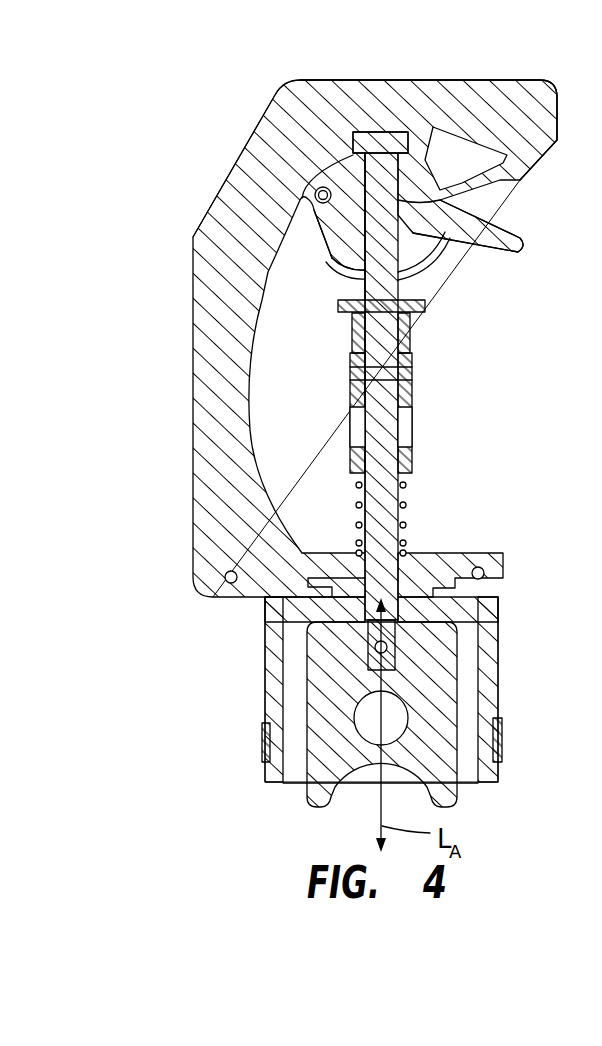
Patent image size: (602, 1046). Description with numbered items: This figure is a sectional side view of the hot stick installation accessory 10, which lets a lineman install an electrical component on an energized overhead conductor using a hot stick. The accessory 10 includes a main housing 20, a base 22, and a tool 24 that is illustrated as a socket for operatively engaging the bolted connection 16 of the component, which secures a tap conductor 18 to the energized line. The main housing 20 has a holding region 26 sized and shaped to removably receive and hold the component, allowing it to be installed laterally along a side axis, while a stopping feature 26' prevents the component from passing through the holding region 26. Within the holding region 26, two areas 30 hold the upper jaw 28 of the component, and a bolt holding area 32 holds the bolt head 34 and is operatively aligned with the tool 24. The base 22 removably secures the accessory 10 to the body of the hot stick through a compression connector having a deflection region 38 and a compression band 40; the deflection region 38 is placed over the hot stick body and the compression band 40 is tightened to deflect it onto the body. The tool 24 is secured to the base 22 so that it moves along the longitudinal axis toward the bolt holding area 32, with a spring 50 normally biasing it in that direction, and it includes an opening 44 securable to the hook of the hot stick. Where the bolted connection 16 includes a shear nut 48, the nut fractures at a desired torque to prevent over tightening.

The hot stick installation accessory 10 is at (176, 90).
The bolted connection 16 is at (420, 331).
The tap conductor 18 is at (322, 260).
The main housing 20 is at (214, 168).
The base 22 is at (248, 659).
The tool 24 is at (425, 454).
The holding region 26 is at (428, 115).
The stopping feature 26' is at (462, 118).
The upper jaw 28 is at (335, 165).
The areas 30 is at (315, 172).
The bolt holding area 32 is at (408, 132).
The bolt head 34 is at (372, 132).
The deflection region 38 is at (262, 693).
The compression band 40 is at (260, 742).
The opening 44 is at (402, 708).
The shear nut 48 is at (350, 373).
The spring 50 is at (403, 494).